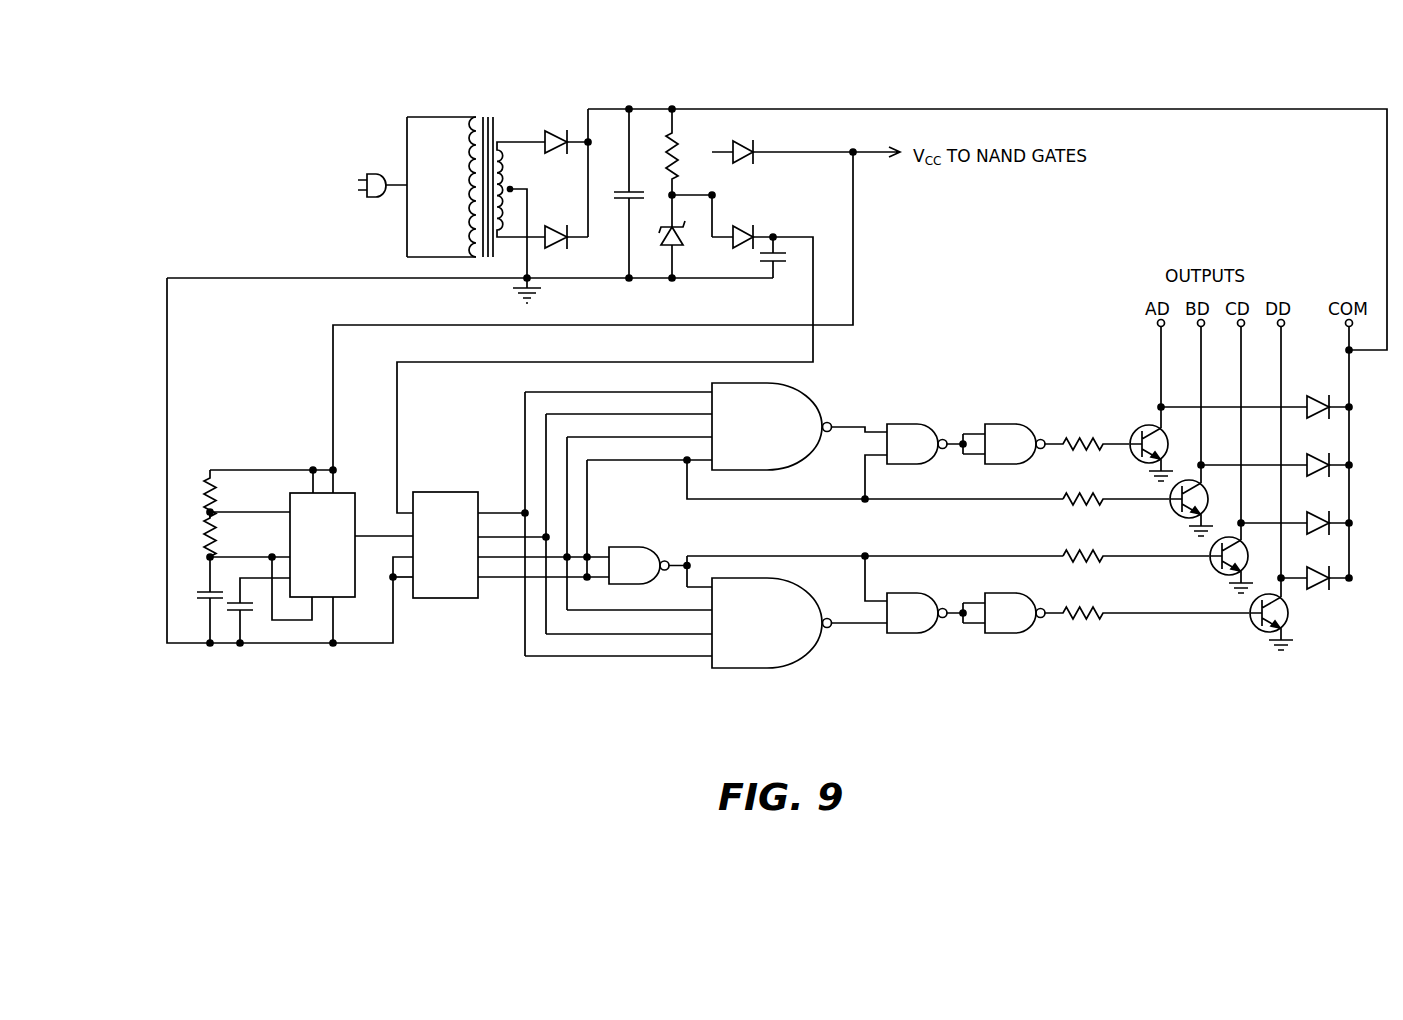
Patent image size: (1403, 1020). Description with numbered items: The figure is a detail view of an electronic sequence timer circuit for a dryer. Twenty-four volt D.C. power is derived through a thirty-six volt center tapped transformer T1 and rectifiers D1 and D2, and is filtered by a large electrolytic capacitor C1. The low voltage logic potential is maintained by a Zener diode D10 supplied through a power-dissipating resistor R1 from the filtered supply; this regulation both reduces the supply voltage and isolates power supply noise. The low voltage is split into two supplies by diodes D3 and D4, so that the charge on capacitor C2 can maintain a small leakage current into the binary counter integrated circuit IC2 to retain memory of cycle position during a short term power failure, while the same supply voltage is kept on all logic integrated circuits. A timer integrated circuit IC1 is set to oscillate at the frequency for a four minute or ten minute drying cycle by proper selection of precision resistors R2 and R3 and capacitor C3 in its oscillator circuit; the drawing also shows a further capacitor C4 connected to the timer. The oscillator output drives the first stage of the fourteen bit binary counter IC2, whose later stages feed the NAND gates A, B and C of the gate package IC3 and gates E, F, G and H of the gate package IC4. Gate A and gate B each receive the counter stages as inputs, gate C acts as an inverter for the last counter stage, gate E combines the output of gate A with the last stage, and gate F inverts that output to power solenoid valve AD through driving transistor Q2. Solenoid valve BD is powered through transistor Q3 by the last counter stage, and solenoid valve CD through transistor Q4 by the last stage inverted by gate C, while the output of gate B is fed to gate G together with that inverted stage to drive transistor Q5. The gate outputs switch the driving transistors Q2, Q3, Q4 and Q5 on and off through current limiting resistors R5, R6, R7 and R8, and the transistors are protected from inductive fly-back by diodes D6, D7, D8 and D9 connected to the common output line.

The center tapped transformer T1 is at (451, 186).
The rectifier D1 is at (566, 130).
The rectifier D2 is at (566, 223).
The diode D3 is at (790, 140).
The diode D4 is at (750, 224).
The Zener diode D10 is at (686, 236).
The electrolytic capacitor C1 is at (625, 193).
The capacitor C2 is at (781, 262).
The capacitor C3 is at (200, 600).
The control capacitor C4 is at (258, 610).
The power-dissipating resistor R1 is at (687, 152).
The precision resistor R2 is at (224, 493).
The precision resistor R3 is at (224, 534).
The current limiting resistor R5 is at (1087, 433).
The current limiting resistor R6 is at (1116, 490).
The current limiting resistor R7 is at (1136, 546).
The current limiting resistor R8 is at (1147, 604).
The 555 timer integrated circuit IC1 is at (351, 568).
The 14 bit binary counter integrated circuit IC2 is at (511, 559).
The NAND gate integrated circuit (gates A, B, C) IC3 is at (720, 540).
The NAND gate integrated circuits IC4, IC5 (gates E, F, G, H) IC4 is at (966, 552).
The driving transistor Q2 is at (1159, 450).
The driving transistor Q3 is at (1199, 506).
The driving transistor Q4 is at (1242, 562).
The driving transistor Q5 is at (1284, 622).
The fly-back protection diode D6 is at (1255, 422).
The fly-back protection diode D7 is at (1275, 479).
The fly-back protection diode D8 is at (1295, 536).
The fly-back protection diode D9 is at (1315, 591).